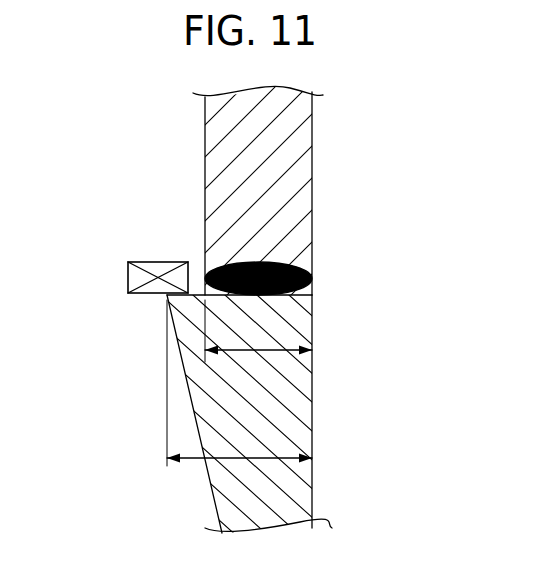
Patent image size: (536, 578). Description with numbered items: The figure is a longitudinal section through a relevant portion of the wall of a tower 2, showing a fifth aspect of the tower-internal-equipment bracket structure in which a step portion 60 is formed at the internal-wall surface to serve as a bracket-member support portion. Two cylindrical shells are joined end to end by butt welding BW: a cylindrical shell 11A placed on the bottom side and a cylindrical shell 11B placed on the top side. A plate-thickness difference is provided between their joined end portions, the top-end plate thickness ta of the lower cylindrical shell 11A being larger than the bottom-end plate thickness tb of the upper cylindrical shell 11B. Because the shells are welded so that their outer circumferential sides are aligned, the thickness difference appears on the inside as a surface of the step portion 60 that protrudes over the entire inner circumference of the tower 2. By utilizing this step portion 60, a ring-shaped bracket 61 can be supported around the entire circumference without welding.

The tower 2 is at (442, 186).
The cylindrical shell 11A is at (312, 393).
The cylindrical shell 11B is at (312, 130).
The butt welding BW is at (312, 256).
The step portion 60 is at (198, 292).
The ring-shaped bracket 61 is at (128, 277).
The bottom-end plate thickness tb is at (258, 331).
The top-end plate thickness ta is at (239, 383).